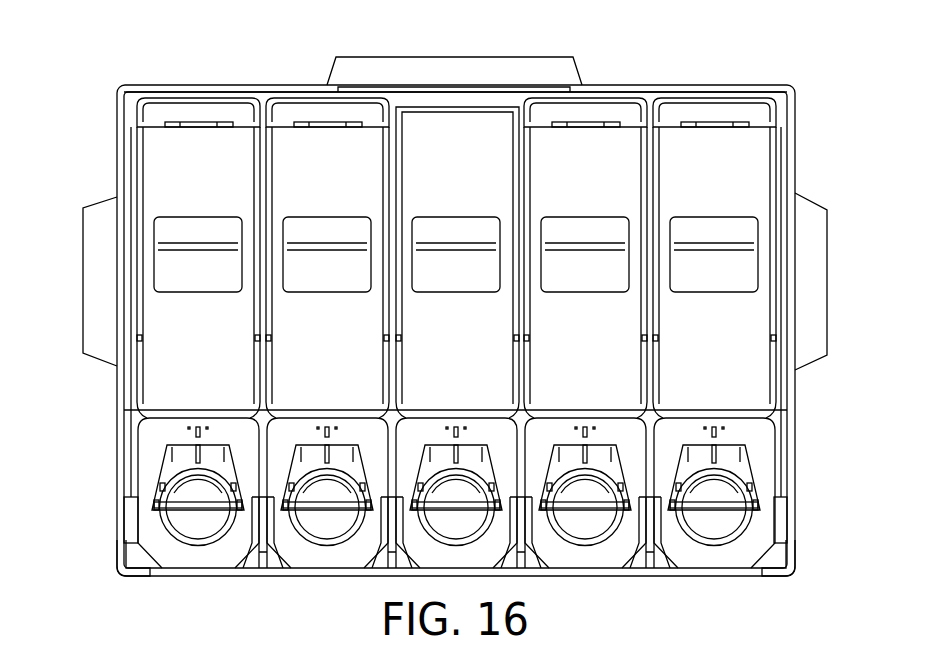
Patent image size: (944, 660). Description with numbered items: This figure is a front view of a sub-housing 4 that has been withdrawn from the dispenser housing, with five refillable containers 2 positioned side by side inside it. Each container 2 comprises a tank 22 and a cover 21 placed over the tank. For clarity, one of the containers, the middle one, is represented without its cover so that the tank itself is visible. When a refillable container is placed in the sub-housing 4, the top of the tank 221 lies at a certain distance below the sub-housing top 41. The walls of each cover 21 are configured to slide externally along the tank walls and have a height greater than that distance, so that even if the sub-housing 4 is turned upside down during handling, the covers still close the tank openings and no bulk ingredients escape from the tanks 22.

The refillable container 2 is at (147, 306).
The cover 21 is at (220, 110).
The tank 22 is at (172, 208).
The top of the tank 221 is at (457, 207).
The sub-housing 4 is at (443, 296).
The sub-housing top 41 is at (158, 83).